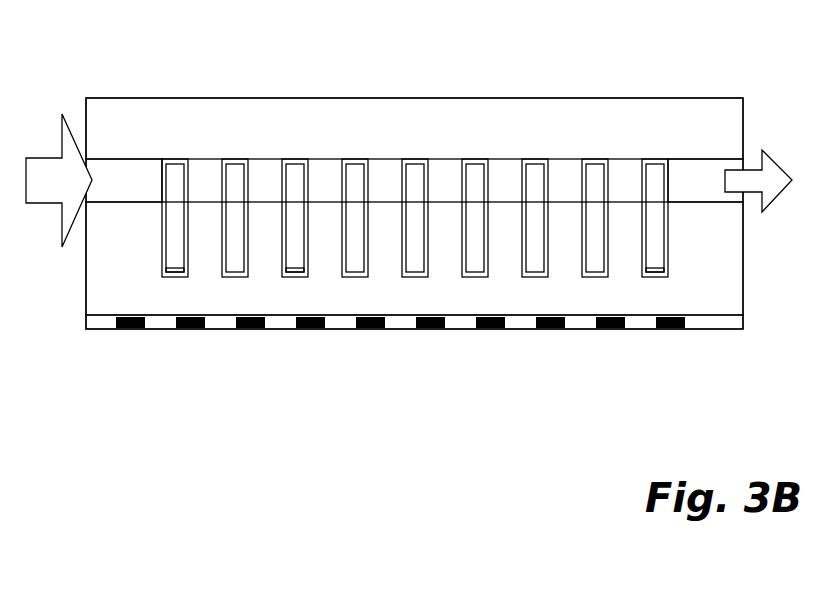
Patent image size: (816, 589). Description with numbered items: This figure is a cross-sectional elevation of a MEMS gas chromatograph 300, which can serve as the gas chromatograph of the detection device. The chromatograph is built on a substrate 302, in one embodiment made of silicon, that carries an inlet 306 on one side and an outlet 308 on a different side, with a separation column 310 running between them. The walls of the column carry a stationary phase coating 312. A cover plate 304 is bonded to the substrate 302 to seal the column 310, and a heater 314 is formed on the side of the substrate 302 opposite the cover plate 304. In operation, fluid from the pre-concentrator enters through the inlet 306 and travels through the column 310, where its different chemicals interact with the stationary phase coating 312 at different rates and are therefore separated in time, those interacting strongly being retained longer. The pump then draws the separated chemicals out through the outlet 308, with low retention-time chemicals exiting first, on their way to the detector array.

The MEMS gas chromatograph 300 is at (472, 70).
The substrate 302 is at (97, 270).
The cover plate 304 is at (181, 110).
The inlet 306 is at (120, 185).
The outlet 308 is at (706, 178).
The separation column 310 is at (415, 218).
The stationary phase coating 312 is at (172, 277).
The heater 314 is at (675, 332).